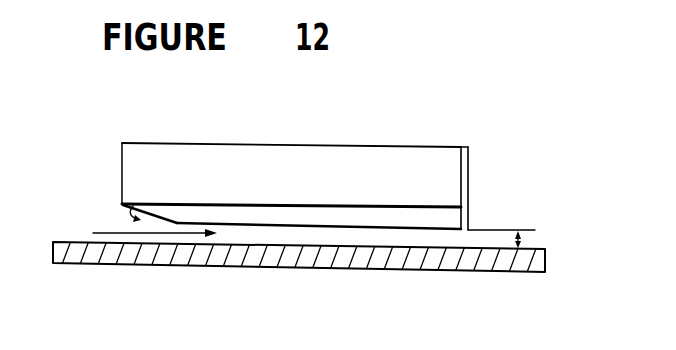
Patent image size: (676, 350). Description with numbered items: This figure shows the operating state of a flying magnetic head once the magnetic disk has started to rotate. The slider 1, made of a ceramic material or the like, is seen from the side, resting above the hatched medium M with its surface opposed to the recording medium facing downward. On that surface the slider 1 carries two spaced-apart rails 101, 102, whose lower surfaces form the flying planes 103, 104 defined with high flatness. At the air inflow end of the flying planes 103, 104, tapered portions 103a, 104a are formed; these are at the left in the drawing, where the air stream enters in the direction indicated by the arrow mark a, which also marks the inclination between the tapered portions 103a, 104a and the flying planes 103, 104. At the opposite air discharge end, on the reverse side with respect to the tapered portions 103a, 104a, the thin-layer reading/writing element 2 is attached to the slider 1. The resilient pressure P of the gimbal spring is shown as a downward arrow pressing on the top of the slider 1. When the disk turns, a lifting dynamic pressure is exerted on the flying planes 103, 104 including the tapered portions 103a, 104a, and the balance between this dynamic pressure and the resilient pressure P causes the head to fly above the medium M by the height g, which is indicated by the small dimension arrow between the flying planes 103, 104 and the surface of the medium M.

The slider 1 is at (308, 151).
The reading/writing element 2 is at (471, 218).
The rail 101 is at (295, 151).
The rail 102 is at (295, 151).
The flying plane 103 is at (277, 167).
The flying plane 104 is at (277, 167).
The tapered portion 103a is at (159, 162).
The tapered portion 104a is at (128, 205).
The resilient pressure P is at (295, 138).
The arrow mark a is at (113, 232).
The flying height g is at (525, 240).
The base plate M is at (365, 257).